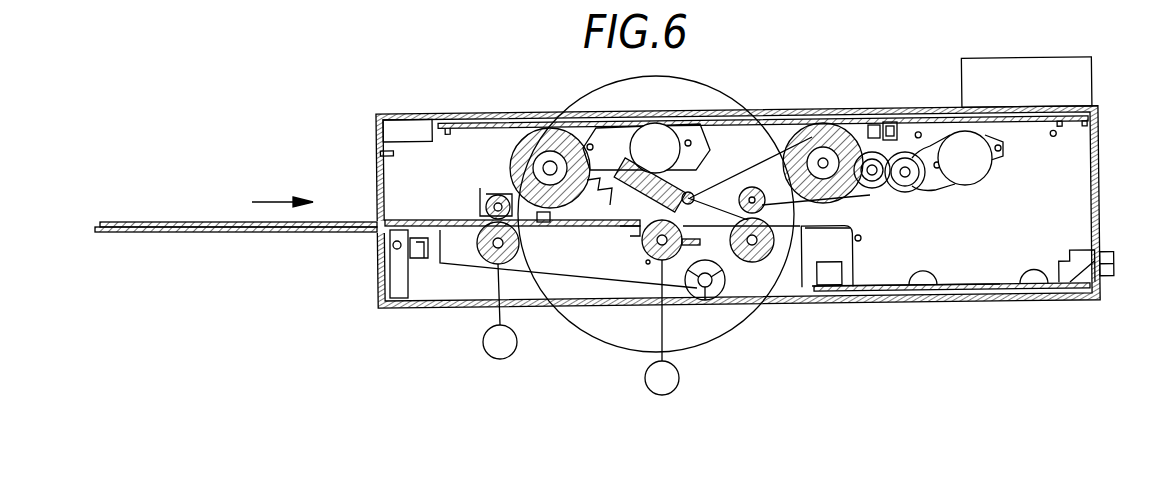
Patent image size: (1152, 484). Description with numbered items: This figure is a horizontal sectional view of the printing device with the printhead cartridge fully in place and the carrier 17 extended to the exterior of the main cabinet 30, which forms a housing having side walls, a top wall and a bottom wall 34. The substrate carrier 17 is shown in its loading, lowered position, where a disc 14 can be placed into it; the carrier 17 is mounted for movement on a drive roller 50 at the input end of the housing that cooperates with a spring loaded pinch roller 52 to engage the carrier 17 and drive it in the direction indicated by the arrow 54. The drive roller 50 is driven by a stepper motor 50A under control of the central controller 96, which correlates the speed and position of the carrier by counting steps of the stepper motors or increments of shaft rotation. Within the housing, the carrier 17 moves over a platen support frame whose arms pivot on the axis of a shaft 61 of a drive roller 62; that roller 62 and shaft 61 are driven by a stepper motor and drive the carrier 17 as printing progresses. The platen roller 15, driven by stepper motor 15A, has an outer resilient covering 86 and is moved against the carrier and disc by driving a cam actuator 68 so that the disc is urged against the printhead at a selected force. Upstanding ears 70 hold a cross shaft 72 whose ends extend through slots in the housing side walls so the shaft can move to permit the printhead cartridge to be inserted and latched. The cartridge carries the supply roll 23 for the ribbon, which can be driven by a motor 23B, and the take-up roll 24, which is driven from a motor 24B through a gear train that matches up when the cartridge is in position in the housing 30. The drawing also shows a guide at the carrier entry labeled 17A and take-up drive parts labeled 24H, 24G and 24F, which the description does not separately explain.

The disc 14 is at (132, 222).
The arrow 54 is at (272, 200).
The carrier 17 is at (270, 232).
The sheet guide rail 17A is at (365, 218).
The supply roll 23 is at (535, 150).
The motor 23B is at (660, 140).
The upstanding ears 70 is at (713, 213).
The cross shaft 72 is at (692, 192).
The take-up roll 24 is at (826, 137).
The bracket 24H is at (864, 150).
The idler roller 24G is at (883, 190).
The idler roller 24F is at (893, 192).
The motor 24B is at (982, 170).
The main cabinet 30 is at (940, 116).
The controller 96 is at (1092, 70).
The pinch roller 52 is at (482, 197).
The drive roller 50 is at (488, 268).
The stepper motor 50A is at (512, 354).
The platen roller 15 is at (640, 243).
The stepper motor 15A is at (679, 372).
The outer resilient covering 86 is at (648, 262).
The drive roller 62 is at (776, 262).
The cam actuator 68 is at (688, 300).
The shaft 61 is at (777, 235).
The bottom wall 34 is at (903, 290).